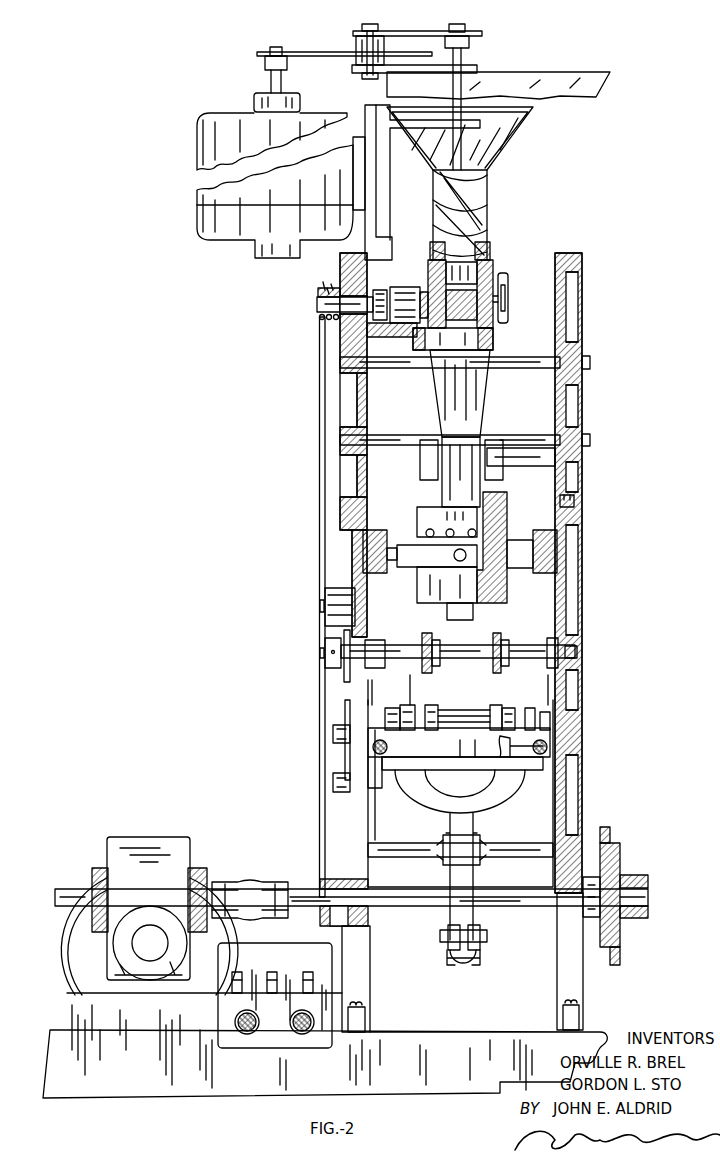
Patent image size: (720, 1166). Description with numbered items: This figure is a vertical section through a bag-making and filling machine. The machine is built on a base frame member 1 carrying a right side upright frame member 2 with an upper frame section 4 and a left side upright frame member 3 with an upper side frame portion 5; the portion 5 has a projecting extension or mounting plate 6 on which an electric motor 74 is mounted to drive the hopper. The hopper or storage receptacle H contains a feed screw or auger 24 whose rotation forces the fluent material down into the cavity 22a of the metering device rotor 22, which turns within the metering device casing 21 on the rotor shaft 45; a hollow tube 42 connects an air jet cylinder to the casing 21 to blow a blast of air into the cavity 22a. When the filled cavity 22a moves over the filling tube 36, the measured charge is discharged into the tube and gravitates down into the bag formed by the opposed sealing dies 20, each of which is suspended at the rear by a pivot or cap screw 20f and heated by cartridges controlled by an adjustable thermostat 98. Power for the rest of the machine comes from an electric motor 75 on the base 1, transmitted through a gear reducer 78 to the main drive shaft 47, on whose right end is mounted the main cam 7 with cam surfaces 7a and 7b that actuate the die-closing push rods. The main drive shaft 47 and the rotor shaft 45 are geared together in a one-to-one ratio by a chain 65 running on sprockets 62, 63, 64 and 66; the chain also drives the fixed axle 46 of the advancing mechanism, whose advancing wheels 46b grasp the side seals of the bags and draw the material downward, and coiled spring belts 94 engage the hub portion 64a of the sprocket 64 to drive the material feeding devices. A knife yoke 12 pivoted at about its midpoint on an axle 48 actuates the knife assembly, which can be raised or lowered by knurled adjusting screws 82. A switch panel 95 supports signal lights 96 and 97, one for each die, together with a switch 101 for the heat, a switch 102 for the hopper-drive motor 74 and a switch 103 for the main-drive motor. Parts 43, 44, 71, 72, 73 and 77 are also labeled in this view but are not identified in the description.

The base frame member 1 is at (67, 1035).
The right side upright frame member 2 is at (583, 998).
The left side upright frame member 3 is at (370, 992).
The upper frame portion 4 is at (565, 393).
The upper side frame portion 5 is at (357, 468).
The upper extension or mounting plate 6 is at (376, 218).
The main cam 7 is at (621, 858).
The cam surface 7a is at (606, 840).
The cam surface 7b is at (602, 955).
The knife yoke 12 is at (490, 793).
The sealing die 20 is at (515, 522).
The pivot or cap screw 20f is at (448, 560).
The metering device casing 21 is at (362, 338).
The metering device rotor 22 is at (417, 340).
The cavity 22a is at (495, 262).
The feed screw or auger 24 is at (480, 210).
The filling tube 36 is at (478, 393).
The hollow tube 42 is at (410, 31).
The hub 43 is at (356, 70).
The bolt 44 is at (362, 36).
The rotor shaft 45 is at (317, 303).
The axle 46 is at (445, 652).
The advancing wheels 46b is at (492, 672).
The main drive shaft 47 is at (68, 890).
The axle 48 is at (422, 843).
The sprocket 62 is at (319, 652).
The sprocket 63 is at (322, 922).
The sprocket 64 is at (312, 327).
The hub portion 64a is at (318, 292).
The chain 65 is at (319, 508).
The sprocket 66 is at (319, 612).
The pivot 71 is at (262, 62).
The bolt 72 is at (470, 46).
The arm 73 is at (297, 52).
The electric motor 74 is at (215, 118).
The electric motor 75 is at (75, 950).
The coupling 77 is at (250, 885).
The gear reducer 78 is at (128, 840).
The knurled adjusting screws 82 is at (333, 732).
The coiled spring belts 94 is at (332, 290).
The switch panel 95 is at (225, 1017).
The signal light 96 is at (300, 1034).
The signal light 97 is at (243, 1034).
The adjustable thermostat 98 is at (430, 525).
The switch 101 is at (244, 963).
The switch 102 is at (278, 963).
The switch 103 is at (318, 963).
The hopper or storage receptacle H is at (528, 144).